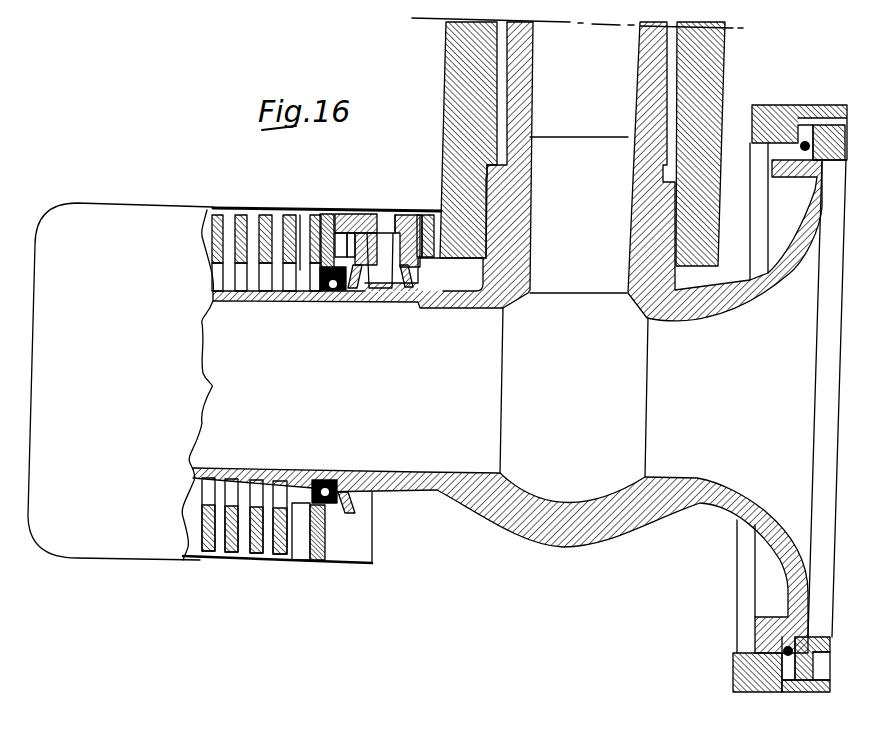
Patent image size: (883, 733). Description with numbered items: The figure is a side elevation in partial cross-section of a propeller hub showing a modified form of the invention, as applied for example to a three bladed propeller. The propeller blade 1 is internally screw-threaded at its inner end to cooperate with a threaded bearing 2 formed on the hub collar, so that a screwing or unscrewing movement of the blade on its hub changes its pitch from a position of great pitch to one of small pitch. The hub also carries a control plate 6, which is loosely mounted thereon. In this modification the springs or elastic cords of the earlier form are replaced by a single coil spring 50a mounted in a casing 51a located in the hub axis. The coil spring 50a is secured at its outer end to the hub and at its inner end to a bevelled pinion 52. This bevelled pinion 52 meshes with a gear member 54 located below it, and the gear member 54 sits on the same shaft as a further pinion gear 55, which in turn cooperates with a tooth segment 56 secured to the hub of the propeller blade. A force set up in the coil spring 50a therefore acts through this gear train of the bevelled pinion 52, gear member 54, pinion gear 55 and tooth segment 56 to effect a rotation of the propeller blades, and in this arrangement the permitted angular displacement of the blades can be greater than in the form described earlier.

The propeller blade 1 is at (712, 80).
The threaded bearing 2 is at (640, 120).
The control plate 6 is at (810, 105).
The coil spring 50a is at (257, 214).
The casing 51a is at (223, 208).
The bevelled pinion 52 is at (333, 213).
The gear member 54 is at (391, 250).
The pinion gear 55 is at (357, 213).
The tooth segment 56 is at (430, 213).